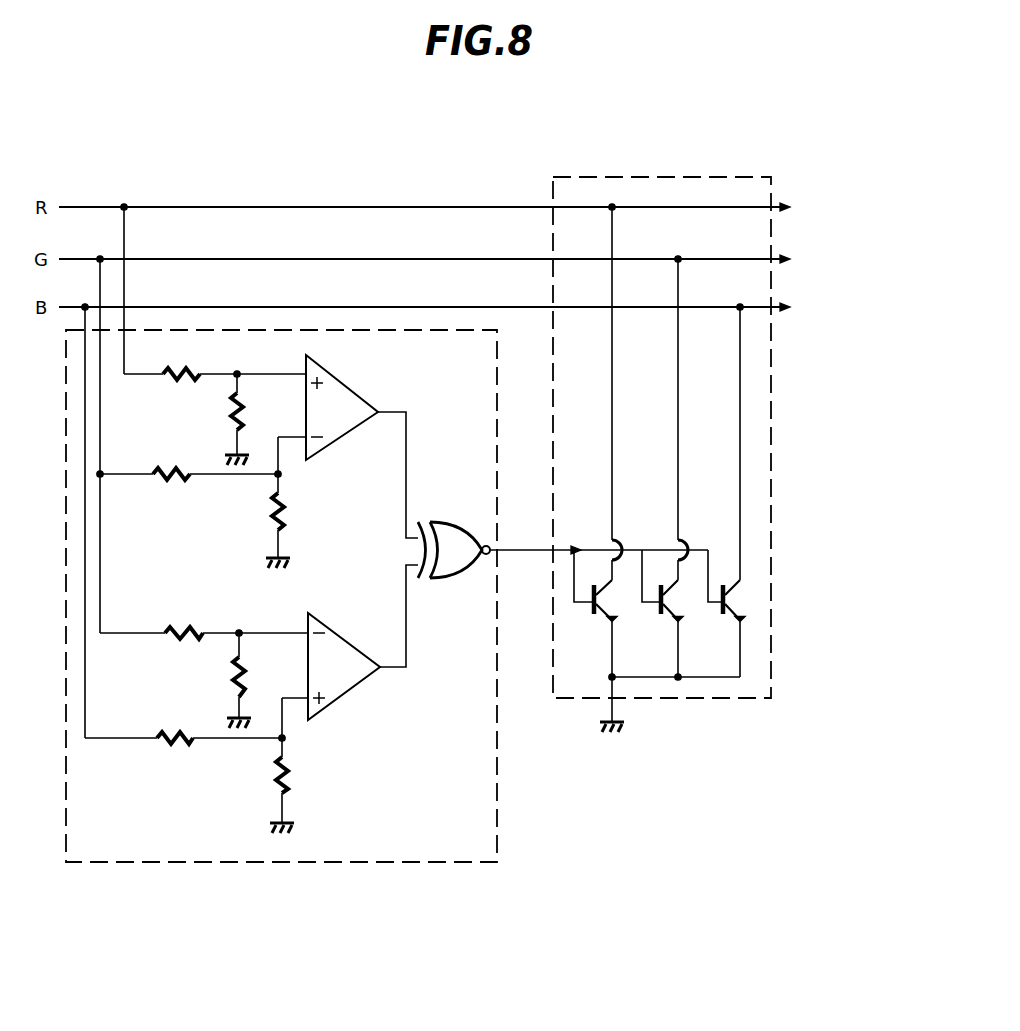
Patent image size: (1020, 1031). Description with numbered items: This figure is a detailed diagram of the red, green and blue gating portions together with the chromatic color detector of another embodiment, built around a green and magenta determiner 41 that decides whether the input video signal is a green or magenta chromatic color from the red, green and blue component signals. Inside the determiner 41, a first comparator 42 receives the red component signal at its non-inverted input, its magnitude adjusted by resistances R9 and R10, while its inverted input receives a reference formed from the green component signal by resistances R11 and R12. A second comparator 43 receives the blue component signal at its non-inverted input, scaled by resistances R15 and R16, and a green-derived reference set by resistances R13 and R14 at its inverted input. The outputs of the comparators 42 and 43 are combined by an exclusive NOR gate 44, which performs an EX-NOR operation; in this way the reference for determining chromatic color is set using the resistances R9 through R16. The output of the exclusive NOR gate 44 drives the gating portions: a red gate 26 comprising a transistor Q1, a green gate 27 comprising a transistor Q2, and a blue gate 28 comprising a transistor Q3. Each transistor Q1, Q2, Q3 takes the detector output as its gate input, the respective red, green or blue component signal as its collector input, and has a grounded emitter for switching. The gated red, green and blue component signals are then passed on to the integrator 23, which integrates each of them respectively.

The green and magenta determiner 41 is at (455, 838).
The comparator 42 is at (348, 407).
The comparator 43 is at (350, 663).
The exclusive NOR gate 44 is at (450, 565).
The red gate 26 is at (597, 621).
The green gate 27 is at (664, 621).
The blue gate 28 is at (726, 621).
The integrator 23 is at (835, 273).
The resistance R9 is at (215, 363).
The resistance R10 is at (215, 419).
The resistance R11 is at (189, 463).
The resistance R12 is at (301, 521).
The resistance R13 is at (204, 622).
The resistance R14 is at (217, 680).
The resistance R15 is at (183, 727).
The resistance R16 is at (301, 785).
The transistor Q1 is at (600, 442).
The transistor Q2 is at (667, 468).
The transistor Q3 is at (731, 492).